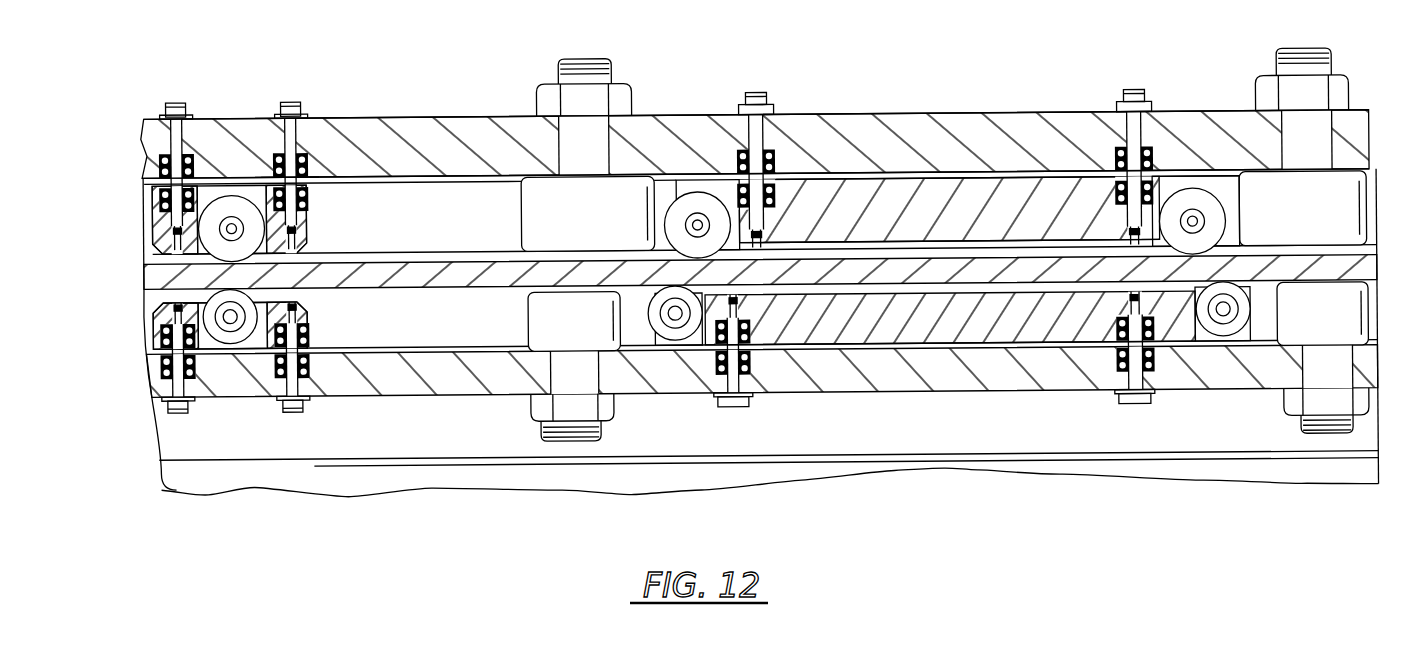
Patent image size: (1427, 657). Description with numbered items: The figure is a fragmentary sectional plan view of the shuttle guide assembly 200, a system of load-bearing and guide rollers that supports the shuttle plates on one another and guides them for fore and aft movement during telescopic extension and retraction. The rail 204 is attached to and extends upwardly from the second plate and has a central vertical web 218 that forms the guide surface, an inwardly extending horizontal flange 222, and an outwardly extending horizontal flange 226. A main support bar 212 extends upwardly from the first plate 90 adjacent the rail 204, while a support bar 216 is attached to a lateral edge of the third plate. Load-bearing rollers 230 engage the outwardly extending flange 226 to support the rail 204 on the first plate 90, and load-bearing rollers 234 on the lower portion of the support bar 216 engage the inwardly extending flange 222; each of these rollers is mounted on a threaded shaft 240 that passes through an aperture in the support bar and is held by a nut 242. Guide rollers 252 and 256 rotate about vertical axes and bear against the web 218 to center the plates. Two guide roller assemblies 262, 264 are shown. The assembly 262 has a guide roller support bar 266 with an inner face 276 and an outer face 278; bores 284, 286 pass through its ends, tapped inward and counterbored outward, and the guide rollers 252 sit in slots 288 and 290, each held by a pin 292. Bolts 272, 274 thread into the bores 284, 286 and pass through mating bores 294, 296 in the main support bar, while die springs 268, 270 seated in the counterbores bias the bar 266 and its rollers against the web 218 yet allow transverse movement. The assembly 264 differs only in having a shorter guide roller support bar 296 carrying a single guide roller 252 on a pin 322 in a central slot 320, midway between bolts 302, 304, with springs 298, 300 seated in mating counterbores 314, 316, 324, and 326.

The first plate 90 is at (957, 442).
The shuttle guide assembly 200 is at (457, 15).
The rail 204 is at (944, 248).
The main support bar 212 is at (928, 114).
The support bar 216 is at (895, 389).
The central vertical web 218 is at (155, 268).
The inwardly extending horizontal flange 222 is at (495, 319).
The outwardly extending horizontal flange 226 is at (492, 231).
The load-bearing rollers 230 is at (607, 210).
The load-bearing rollers 234 is at (598, 324).
The threaded shaft 240 is at (580, 129).
The nut 242 is at (540, 82).
The guide roller 252 is at (234, 194).
The guide rollers 256 is at (675, 341).
The guide roller assembly 262 is at (940, 165).
The guide roller assembly 264 is at (320, 199).
The guide roller support bar 266 is at (1033, 176).
The spring 268 is at (748, 153).
The spring 270 is at (1155, 180).
The bolt 272 is at (757, 93).
The bolt 274 is at (1136, 96).
The inner face 276 is at (866, 244).
The outer face 278 is at (1024, 177).
The bore 284 is at (775, 203).
The bore 286 is at (1116, 196).
The slot 288 is at (710, 187).
The slot 290 is at (1178, 184).
The pin 292 is at (698, 225).
The mating bore 294 is at (777, 163).
The guide roller support bar 296 is at (156, 236).
The spring 298 is at (162, 186).
The spring 300 is at (313, 209).
The bolt 302 is at (176, 96).
The bolt 304 is at (292, 98).
The mating bore 314 is at (164, 201).
The mating bore 316 is at (300, 217).
The central slot 320 is at (210, 186).
The pin 322 is at (198, 299).
The mating bore 324 is at (161, 159).
The mating bore 326 is at (310, 164).